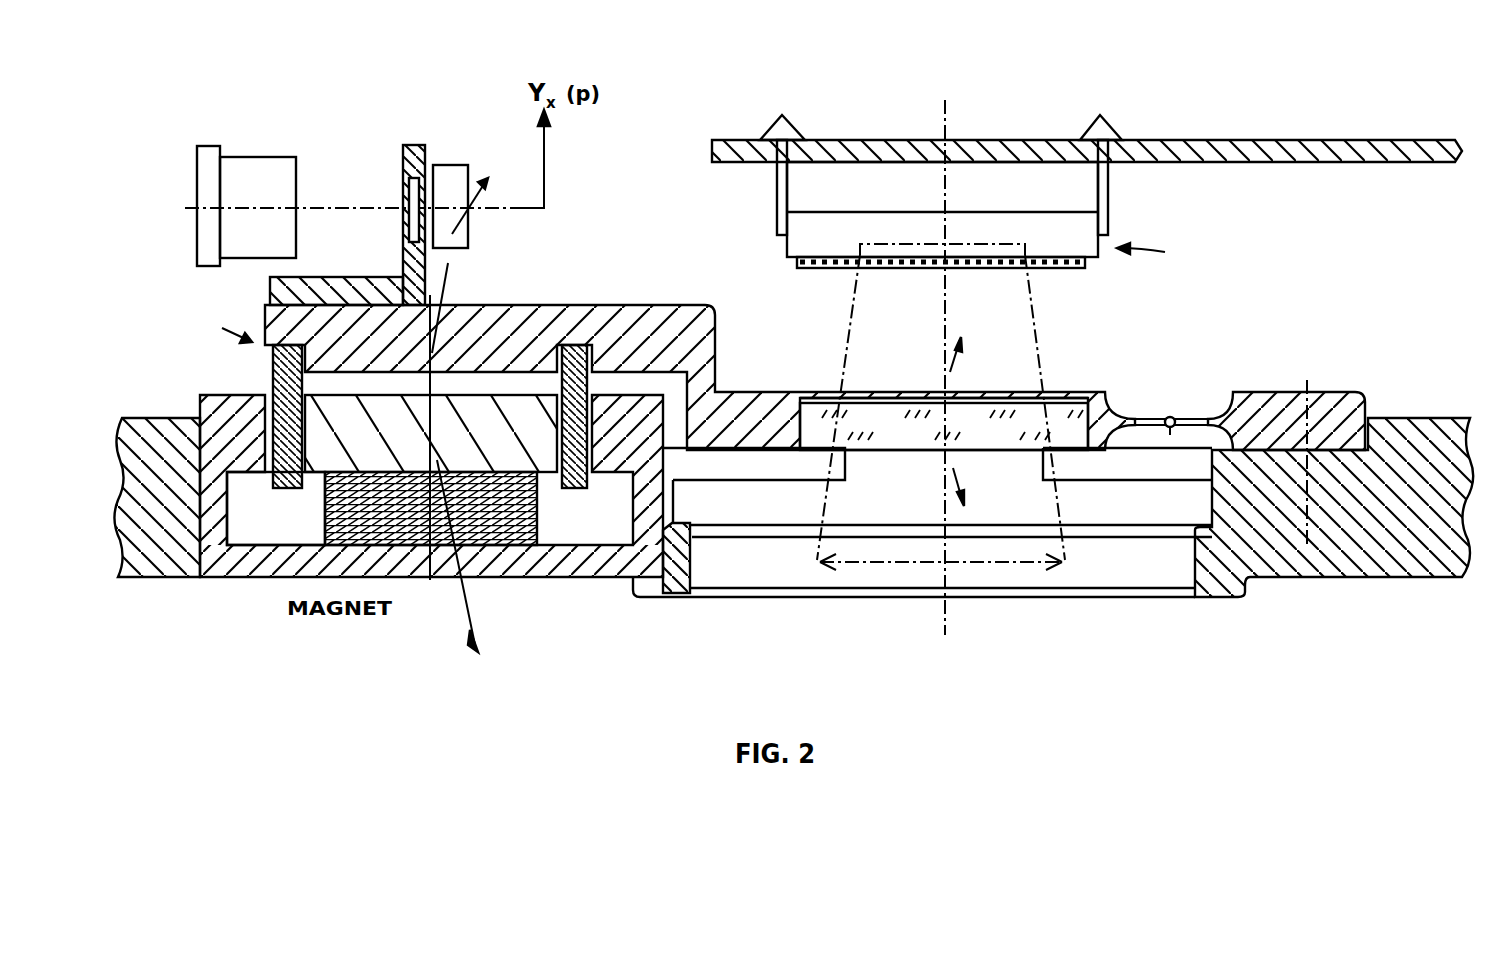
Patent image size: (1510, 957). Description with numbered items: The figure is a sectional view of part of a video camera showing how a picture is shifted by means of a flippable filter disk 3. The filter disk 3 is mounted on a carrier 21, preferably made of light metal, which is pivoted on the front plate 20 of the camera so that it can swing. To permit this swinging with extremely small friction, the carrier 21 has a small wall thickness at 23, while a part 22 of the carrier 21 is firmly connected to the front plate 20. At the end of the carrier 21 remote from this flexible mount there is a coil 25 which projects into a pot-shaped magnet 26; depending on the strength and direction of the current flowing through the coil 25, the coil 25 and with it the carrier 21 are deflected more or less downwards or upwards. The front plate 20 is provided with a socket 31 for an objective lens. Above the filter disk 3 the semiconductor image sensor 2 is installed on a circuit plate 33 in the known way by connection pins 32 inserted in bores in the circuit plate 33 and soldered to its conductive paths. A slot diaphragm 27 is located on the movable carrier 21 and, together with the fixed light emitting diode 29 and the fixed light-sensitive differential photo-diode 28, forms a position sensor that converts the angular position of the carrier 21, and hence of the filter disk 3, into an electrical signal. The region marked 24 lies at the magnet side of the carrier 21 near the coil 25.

The semiconductor image sensor 2 is at (1075, 240).
The flippable filter disk 3 is at (893, 420).
The front plate 20 is at (802, 522).
The carrier 21 is at (711, 301).
The part of the carrier 22 is at (1286, 456).
The small wall thickness 23 is at (1170, 417).
The pole piece 24 is at (262, 475).
The coil 25 is at (272, 366).
The pot-shaped magnet 26 is at (212, 410).
The slot diaphragm 27 is at (373, 173).
The light-sensitive differential photo-diode 28 is at (540, 192).
The light emitting diode 29 is at (246, 199).
The socket 31 is at (1195, 567).
The connection pins 32 is at (775, 194).
The circuit plate 33 is at (1178, 138).